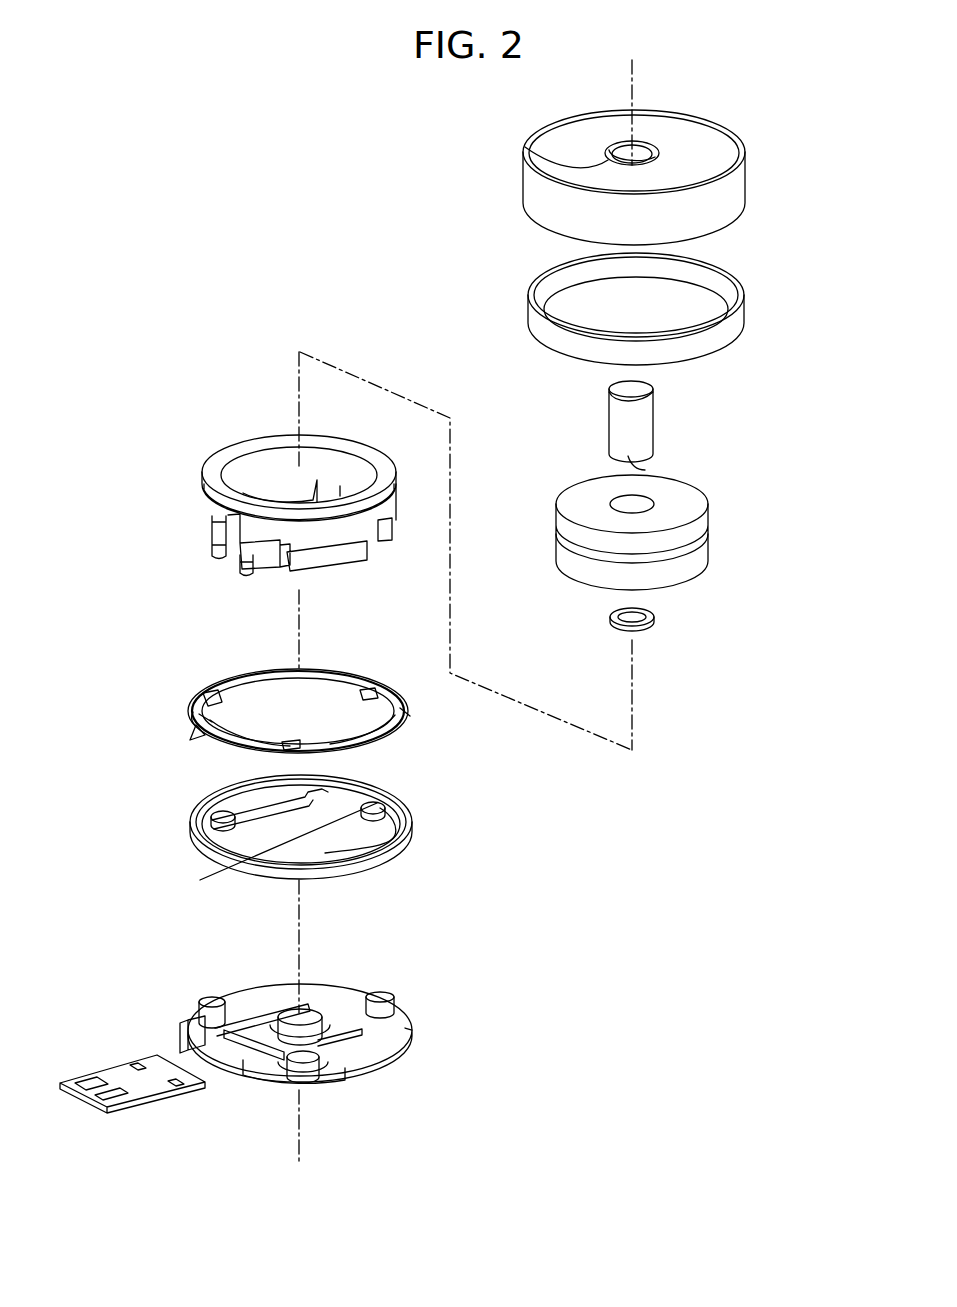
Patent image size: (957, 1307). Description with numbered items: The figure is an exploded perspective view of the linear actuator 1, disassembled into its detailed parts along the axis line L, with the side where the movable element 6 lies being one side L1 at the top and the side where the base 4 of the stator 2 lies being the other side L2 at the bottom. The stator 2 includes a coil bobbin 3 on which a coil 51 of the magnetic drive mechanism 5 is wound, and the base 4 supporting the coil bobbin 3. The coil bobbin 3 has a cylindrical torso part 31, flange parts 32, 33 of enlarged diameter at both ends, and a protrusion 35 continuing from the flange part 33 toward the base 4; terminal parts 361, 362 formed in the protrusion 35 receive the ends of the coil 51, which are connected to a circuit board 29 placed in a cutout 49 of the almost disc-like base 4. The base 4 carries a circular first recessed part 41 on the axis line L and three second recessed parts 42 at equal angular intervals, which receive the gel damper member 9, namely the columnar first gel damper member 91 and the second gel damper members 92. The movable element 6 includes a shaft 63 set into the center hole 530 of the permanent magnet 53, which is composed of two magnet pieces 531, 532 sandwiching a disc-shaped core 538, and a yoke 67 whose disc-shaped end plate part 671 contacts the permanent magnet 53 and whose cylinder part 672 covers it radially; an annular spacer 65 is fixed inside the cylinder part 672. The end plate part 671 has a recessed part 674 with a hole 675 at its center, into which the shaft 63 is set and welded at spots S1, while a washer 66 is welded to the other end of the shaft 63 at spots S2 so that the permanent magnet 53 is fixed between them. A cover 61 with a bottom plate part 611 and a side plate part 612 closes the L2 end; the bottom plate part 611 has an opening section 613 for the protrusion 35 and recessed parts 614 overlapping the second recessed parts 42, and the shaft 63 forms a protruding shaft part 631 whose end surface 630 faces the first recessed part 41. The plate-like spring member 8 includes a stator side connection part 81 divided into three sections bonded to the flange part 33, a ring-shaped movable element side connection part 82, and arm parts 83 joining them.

The linear actuator 1 is at (372, 191).
The stator 2 is at (98, 530).
The coil bobbin 3 is at (270, 512).
The base 4 is at (285, 905).
The magnetic drive mechanism 5 is at (482, 270).
The movable element 6 is at (822, 342).
The spring member 8 is at (308, 703).
The gel damper member 9 is at (328, 1008).
The first gel damper member 91 is at (306, 1015).
The second gel damper members 92 is at (213, 1000).
The circuit board 29 is at (137, 1085).
The torso part 31 is at (356, 472).
The flange part 32 is at (335, 442).
The flange part 33 is at (386, 530).
The protrusion 35 is at (391, 558).
The terminal part 361 is at (219, 560).
The terminal part 362 is at (247, 577).
The first recessed part 41 is at (355, 1042).
The second recessed parts 42 is at (410, 1032).
The cutout 49 is at (240, 1066).
The coil 51 is at (230, 520).
The permanent magnet 53 is at (549, 453).
The center hole 530 is at (618, 496).
The magnet piece 531 is at (567, 558).
The magnet piece 532 is at (567, 530).
The core 538 is at (592, 556).
The cover 61 is at (488, 819).
The bottom plate part 611 is at (360, 848).
The side plate part 612 is at (395, 842).
The opening section 613 is at (328, 850).
The recessed parts 614 is at (210, 835).
The shaft 63 is at (682, 464).
The end surface 630 is at (634, 462).
The shaft part 631 is at (648, 440).
The spacer 65 is at (708, 342).
The washer 66 is at (656, 615).
The yoke 67 is at (645, 225).
The end plate part 671 is at (668, 132).
The cylinder part 672 is at (735, 188).
The recessed part 674 is at (606, 147).
The hole 675 is at (523, 150).
The stator side connection part 81 is at (322, 740).
The movable element side connection part 82 is at (205, 693).
The arm parts 83 is at (218, 728).
The axis line L is at (648, 91).
The one side L1 is at (631, 48).
The other side L2 is at (299, 1178).
The welding spots S1 is at (610, 390).
The welding spots S2 is at (618, 448).